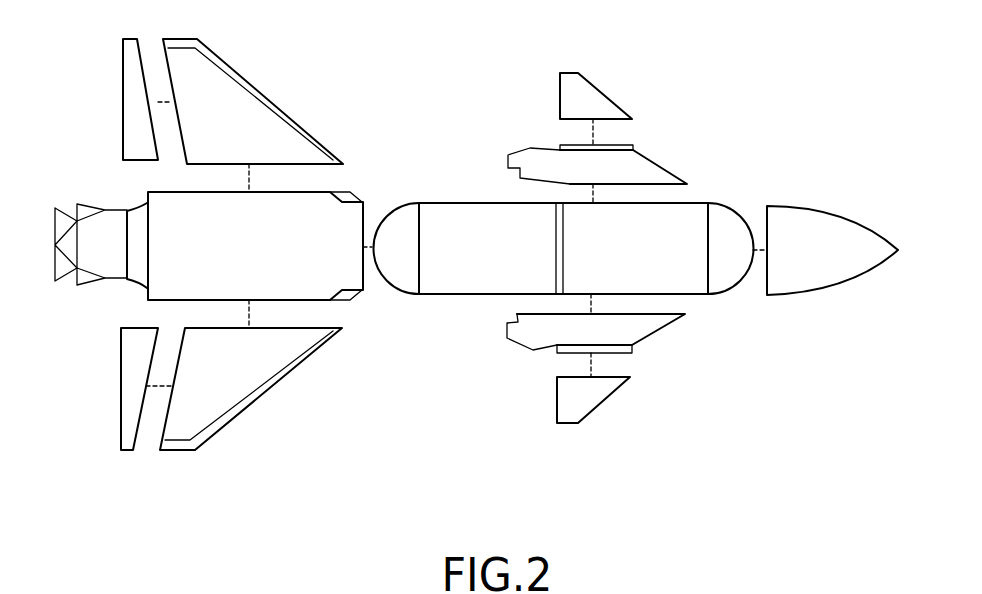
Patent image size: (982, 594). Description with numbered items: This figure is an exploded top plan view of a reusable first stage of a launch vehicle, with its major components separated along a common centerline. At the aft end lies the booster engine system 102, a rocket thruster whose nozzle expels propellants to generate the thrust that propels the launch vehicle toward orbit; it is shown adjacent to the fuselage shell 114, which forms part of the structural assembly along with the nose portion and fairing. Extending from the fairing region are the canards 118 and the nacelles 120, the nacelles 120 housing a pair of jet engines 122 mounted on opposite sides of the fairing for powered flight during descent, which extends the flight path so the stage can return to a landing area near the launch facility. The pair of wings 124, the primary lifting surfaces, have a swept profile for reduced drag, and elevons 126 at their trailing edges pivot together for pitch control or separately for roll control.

The booster engine system 102 is at (453, 294).
The fuselage shell 114 is at (148, 195).
The canards 118 is at (600, 92).
The nacelles 120 is at (667, 168).
The jet engines 122 is at (525, 150).
The wings 124 is at (240, 103).
The elevons 126 is at (132, 99).